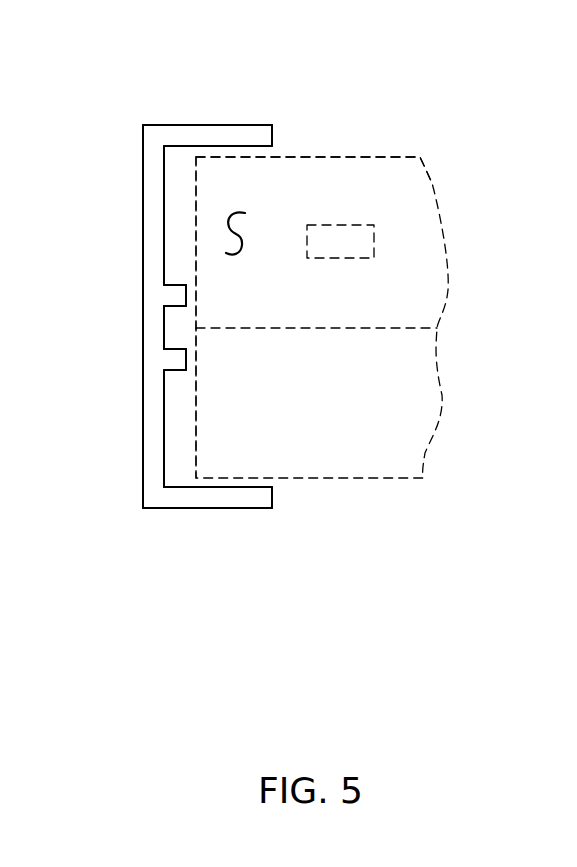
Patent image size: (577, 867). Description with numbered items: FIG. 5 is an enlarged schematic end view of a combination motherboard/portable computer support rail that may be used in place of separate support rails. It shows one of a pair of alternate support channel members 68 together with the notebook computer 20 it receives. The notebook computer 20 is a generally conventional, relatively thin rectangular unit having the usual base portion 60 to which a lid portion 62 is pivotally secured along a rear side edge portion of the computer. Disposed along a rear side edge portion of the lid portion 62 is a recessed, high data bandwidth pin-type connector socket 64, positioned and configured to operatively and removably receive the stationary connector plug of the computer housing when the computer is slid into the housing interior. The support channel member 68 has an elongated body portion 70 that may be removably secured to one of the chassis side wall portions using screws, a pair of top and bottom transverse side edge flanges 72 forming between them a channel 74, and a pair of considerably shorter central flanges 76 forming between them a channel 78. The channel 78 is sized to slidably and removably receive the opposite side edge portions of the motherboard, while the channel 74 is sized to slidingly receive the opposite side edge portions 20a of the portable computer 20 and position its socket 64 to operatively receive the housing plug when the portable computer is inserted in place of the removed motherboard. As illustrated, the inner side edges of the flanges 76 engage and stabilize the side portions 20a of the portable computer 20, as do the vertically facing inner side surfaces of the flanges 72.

The notebook computer 20 is at (399, 135).
The side edge portions of the portable computer 20a is at (223, 157).
The base portion 60 is at (425, 453).
The lid portion 62 is at (432, 183).
The connector socket 64 is at (374, 242).
The support channel member 68 is at (178, 126).
The elongated body portion 70 is at (152, 192).
The top and bottom transverse side edge flanges 72 is at (261, 125).
The channel 74 is at (240, 230).
The central flanges 76 is at (175, 284).
The channel 78 is at (170, 329).